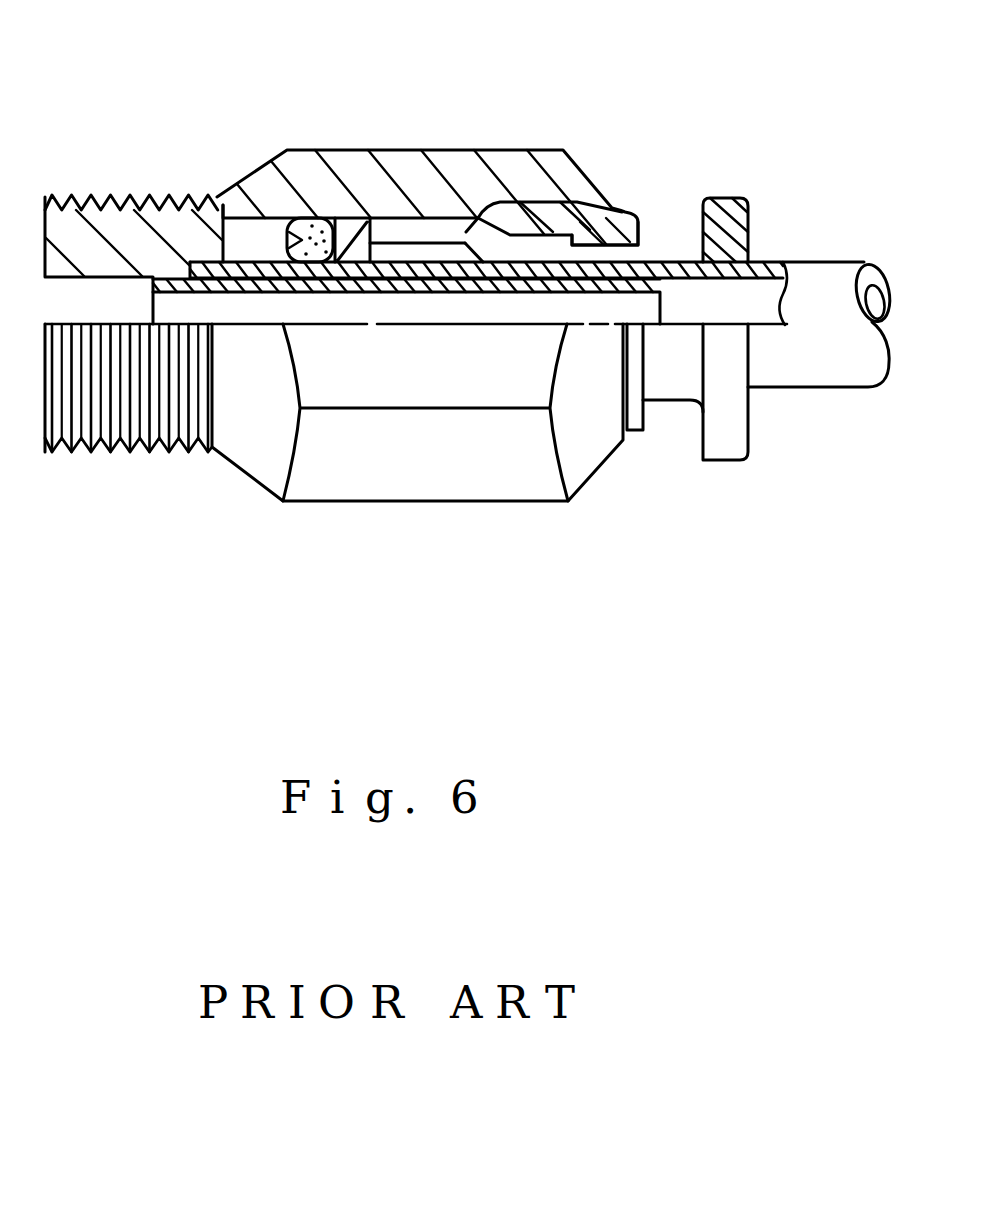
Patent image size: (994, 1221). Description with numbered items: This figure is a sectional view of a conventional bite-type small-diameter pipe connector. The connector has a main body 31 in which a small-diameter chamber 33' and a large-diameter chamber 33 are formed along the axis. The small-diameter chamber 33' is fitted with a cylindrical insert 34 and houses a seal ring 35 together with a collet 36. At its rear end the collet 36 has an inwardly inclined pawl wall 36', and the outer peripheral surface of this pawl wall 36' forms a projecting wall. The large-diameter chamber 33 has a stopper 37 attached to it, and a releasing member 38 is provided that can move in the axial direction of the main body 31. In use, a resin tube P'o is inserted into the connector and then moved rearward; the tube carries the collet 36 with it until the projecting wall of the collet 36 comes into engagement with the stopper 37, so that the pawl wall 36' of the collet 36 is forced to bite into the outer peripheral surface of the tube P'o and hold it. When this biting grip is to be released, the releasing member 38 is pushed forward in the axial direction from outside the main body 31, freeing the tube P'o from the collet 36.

The main body 31 is at (433, 488).
The large-diameter chamber 33 is at (560, 248).
The small-diameter chamber 33' is at (414, 152).
The cylindrical insert 34 is at (217, 197).
The seal ring 35 is at (290, 218).
The collet 36 is at (336, 142).
The pawl wall 36' is at (479, 143).
The stopper 37 is at (590, 225).
The releasing member 38 is at (682, 250).
The resin tube P'o is at (524, 268).